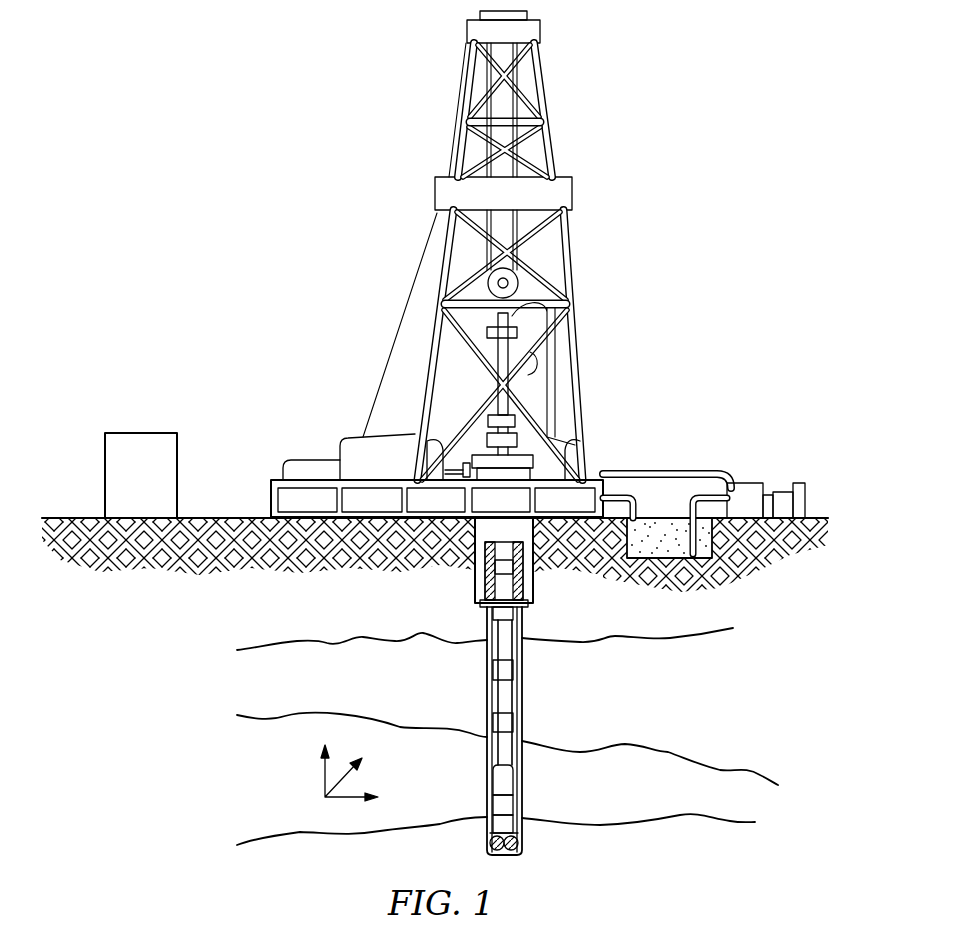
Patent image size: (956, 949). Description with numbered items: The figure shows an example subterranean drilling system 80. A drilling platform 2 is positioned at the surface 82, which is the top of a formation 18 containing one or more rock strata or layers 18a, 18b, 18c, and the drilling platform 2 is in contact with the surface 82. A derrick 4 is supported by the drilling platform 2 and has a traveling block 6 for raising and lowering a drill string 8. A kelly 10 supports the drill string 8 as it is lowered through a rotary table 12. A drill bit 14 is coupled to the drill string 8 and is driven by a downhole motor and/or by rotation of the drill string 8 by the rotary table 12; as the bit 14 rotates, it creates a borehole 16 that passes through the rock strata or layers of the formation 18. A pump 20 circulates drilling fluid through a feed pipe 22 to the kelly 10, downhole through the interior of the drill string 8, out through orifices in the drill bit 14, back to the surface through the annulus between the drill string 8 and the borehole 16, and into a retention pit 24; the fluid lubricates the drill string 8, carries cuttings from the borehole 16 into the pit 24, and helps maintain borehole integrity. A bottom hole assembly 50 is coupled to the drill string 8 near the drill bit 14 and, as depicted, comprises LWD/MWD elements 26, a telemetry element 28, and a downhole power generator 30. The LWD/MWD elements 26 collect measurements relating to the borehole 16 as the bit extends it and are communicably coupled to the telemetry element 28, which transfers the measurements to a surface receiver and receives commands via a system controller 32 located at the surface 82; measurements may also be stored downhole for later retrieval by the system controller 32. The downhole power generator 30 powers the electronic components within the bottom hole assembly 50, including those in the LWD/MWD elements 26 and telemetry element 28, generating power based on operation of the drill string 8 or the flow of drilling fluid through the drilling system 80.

The subterranean drilling system 80 is at (356, 77).
The derrick 4 is at (546, 92).
The traveling block 6 is at (513, 280).
The kelly 10 is at (505, 348).
The rotary table 12 is at (519, 436).
The drilling platform 2 is at (270, 497).
The system controller 32 is at (153, 489).
The surface 82 is at (63, 518).
The feed pipe 22 is at (677, 470).
The pump 20 is at (762, 483).
The retention pit 24 is at (660, 540).
The formation 18 is at (285, 601).
The rock stratum or layer 18a is at (292, 793).
The rock stratum or layer 18b is at (292, 693).
The rock stratum or layer 18c is at (690, 622).
The borehole 16 is at (523, 705).
The drill string 8 is at (508, 685).
The bottom hole assembly 50 is at (530, 765).
The telemetry element 28 is at (493, 778).
The LWD/MWD elements 26 is at (500, 803).
The downhole power generator 30 is at (493, 822).
The drill bit 14 is at (512, 843).